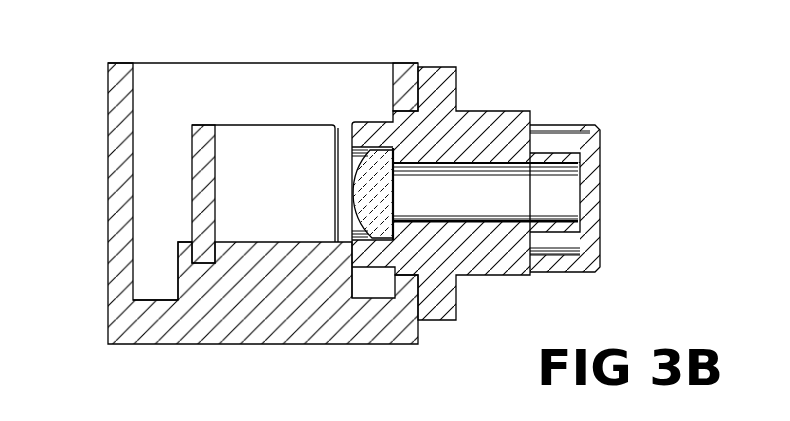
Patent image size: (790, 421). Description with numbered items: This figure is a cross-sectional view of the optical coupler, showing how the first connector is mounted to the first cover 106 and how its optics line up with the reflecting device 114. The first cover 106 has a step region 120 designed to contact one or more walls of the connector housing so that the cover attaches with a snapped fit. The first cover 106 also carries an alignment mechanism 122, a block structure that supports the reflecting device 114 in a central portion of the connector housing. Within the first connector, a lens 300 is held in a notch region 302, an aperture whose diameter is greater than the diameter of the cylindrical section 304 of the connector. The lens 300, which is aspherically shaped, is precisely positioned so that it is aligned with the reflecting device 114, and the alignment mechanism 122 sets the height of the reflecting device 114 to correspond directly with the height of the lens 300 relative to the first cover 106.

The first cover 106 is at (229, 345).
The reflecting device 114 is at (202, 125).
The step region 120 is at (160, 300).
The alignment mechanism 122 is at (178, 260).
The lens 300 is at (352, 182).
The notch region 302 is at (354, 217).
The cylindrical section 304 is at (530, 167).